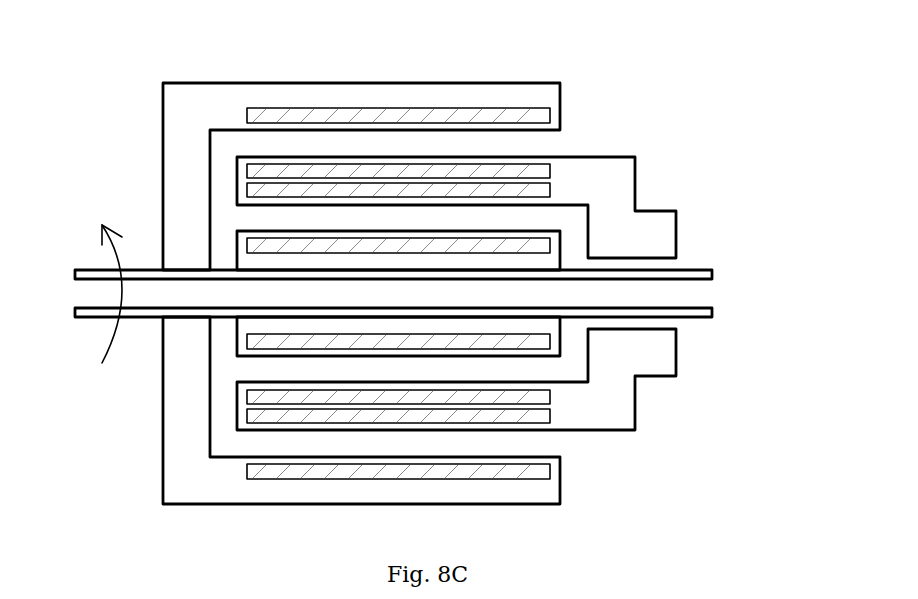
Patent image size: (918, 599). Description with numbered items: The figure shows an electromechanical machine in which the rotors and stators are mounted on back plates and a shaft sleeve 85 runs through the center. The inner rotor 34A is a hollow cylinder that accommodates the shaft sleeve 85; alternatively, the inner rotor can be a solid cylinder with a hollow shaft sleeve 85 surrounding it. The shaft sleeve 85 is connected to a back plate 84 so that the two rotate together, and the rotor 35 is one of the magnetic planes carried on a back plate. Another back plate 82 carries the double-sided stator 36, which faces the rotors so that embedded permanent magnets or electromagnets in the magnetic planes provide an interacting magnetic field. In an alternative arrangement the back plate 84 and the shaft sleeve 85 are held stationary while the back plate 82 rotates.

The back plate 84 is at (187, 167).
The rotor 35 is at (525, 116).
The double-sided stator 36 is at (542, 190).
The back plate 82 is at (623, 227).
The shaft sleeve 85 is at (685, 275).
The inner rotor 34A is at (520, 339).